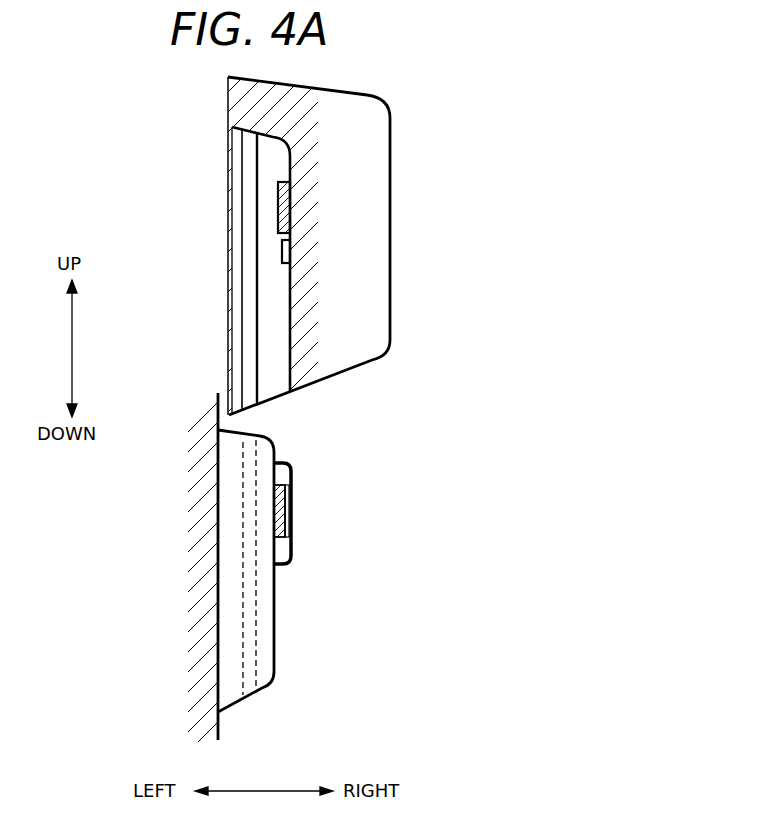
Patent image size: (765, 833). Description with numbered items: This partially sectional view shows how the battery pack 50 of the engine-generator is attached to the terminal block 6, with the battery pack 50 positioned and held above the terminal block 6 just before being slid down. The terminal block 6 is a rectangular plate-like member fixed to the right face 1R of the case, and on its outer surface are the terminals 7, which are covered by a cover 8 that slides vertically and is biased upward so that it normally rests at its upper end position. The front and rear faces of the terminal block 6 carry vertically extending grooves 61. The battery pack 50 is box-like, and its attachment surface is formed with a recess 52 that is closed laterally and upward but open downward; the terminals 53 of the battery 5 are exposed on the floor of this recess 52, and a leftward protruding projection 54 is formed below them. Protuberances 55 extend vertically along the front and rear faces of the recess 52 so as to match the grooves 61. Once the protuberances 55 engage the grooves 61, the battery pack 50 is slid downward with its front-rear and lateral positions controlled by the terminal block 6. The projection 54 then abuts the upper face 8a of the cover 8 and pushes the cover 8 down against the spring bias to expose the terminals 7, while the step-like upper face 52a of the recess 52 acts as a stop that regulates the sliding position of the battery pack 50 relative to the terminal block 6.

The battery 5 is at (299, 290).
The battery pack 50 is at (390, 190).
The recess 52 is at (270, 293).
The upper face of the recess 52a is at (250, 138).
The terminals of the battery 53 is at (278, 195).
The projection 54 is at (282, 250).
The protuberances 55 is at (242, 222).
The terminal block 6 is at (275, 648).
The grooves 61 is at (250, 622).
The terminals 7 is at (291, 492).
The cover 8 is at (291, 538).
The upper face of the cover 8a is at (281, 462).
The right face of the case 1R is at (220, 725).